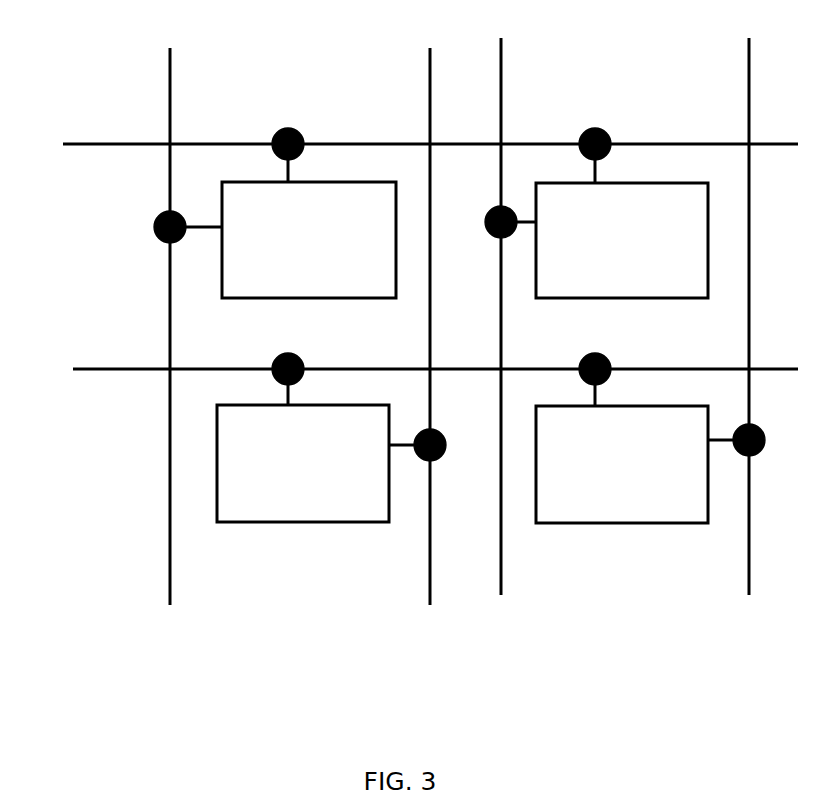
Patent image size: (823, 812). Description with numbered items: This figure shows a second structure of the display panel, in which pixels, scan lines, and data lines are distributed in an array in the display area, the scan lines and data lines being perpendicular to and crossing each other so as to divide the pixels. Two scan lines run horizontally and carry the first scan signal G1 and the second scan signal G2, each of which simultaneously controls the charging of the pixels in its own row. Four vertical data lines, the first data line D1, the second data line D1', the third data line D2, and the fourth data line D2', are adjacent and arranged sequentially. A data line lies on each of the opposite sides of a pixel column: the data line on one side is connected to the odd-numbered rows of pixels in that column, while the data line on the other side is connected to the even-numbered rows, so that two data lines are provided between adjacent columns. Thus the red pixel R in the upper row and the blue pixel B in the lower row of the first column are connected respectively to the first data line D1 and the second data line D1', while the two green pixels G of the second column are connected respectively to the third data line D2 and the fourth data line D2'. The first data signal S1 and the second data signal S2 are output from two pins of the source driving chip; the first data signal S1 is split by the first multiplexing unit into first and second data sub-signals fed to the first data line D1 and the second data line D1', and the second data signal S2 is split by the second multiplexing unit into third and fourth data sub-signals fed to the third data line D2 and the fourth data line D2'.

The first data line D1 is at (187, 313).
The second data line D1' is at (421, 313).
The third data line D2 is at (509, 299).
The fourth data line D2' is at (741, 299).
The first scan signal G1 is at (410, 155).
The second scan signal G2 is at (410, 379).
The red pixel R is at (309, 240).
The green pixel G is at (622, 353).
The blue pixel B is at (303, 463).
The first data signal S1 is at (430, 617).
The second data signal S2 is at (750, 603).